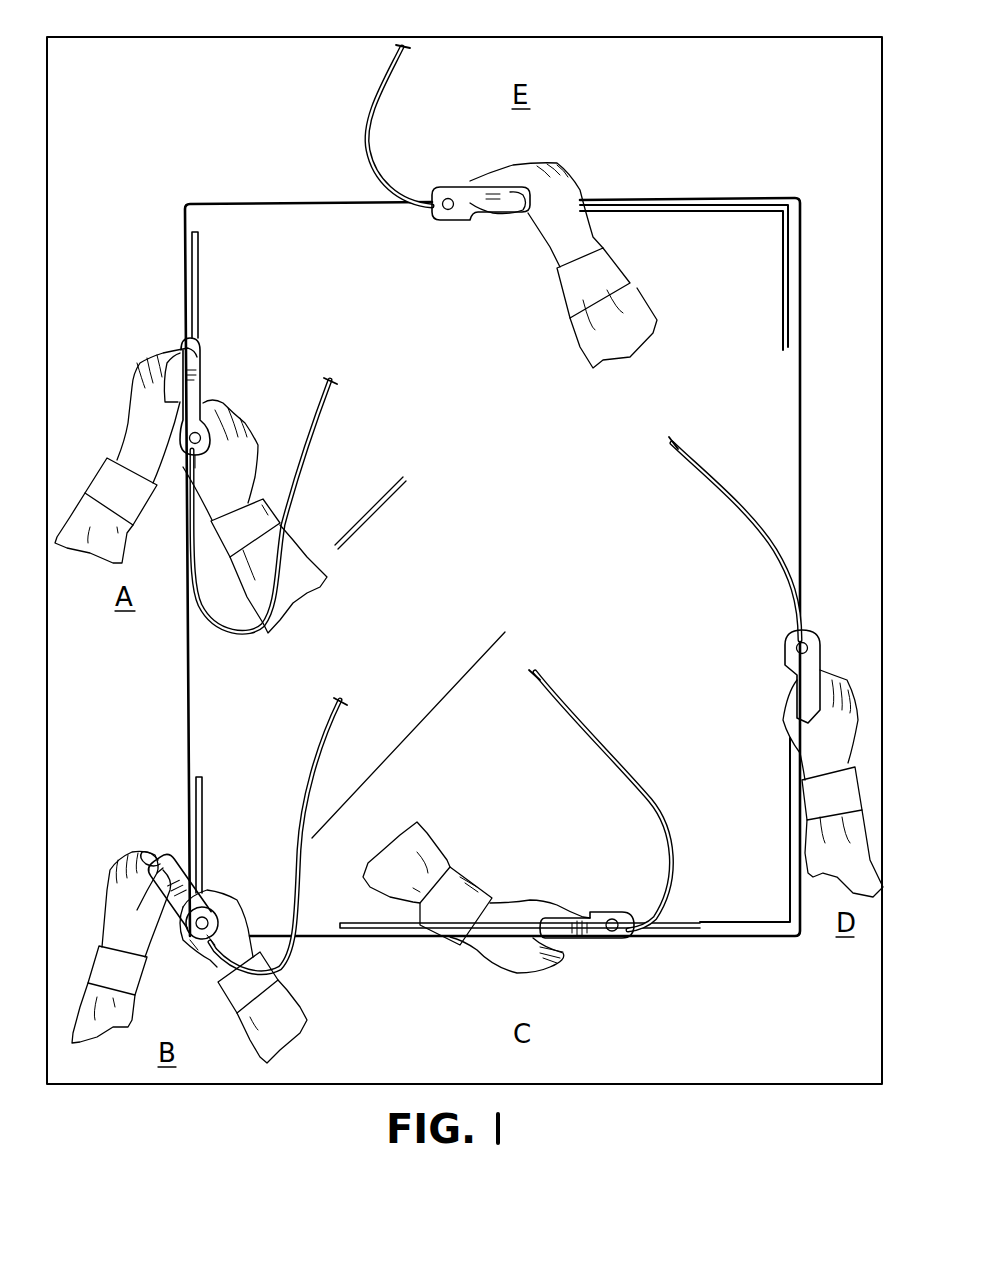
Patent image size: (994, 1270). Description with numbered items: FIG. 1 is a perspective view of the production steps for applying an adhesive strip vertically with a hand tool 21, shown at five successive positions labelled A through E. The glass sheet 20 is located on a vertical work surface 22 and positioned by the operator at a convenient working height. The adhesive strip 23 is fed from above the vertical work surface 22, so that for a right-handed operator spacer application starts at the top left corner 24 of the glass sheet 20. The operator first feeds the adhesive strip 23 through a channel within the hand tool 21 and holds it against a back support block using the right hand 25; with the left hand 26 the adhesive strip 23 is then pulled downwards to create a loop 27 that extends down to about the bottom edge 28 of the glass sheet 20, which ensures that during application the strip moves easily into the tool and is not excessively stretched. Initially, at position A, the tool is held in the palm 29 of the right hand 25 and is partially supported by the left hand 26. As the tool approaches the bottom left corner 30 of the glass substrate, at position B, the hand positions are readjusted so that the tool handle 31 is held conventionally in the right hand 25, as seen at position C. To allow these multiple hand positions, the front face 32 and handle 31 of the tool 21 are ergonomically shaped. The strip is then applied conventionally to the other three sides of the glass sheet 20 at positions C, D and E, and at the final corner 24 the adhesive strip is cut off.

The glass sheet 20 is at (516, 555).
The hand tool 21 is at (460, 190).
The vertical work surface 22 is at (186, 48).
The adhesive strip 23 is at (386, 86).
The top left corner 24 is at (198, 214).
The right hand 25 is at (560, 200).
The left hand 26 is at (143, 430).
The loop 27 is at (233, 640).
The bottom edge 28 is at (388, 940).
The palm 29 is at (193, 462).
The bottom left corner 30 is at (190, 942).
The tool handle 31 is at (487, 190).
The front face 32 is at (205, 440).